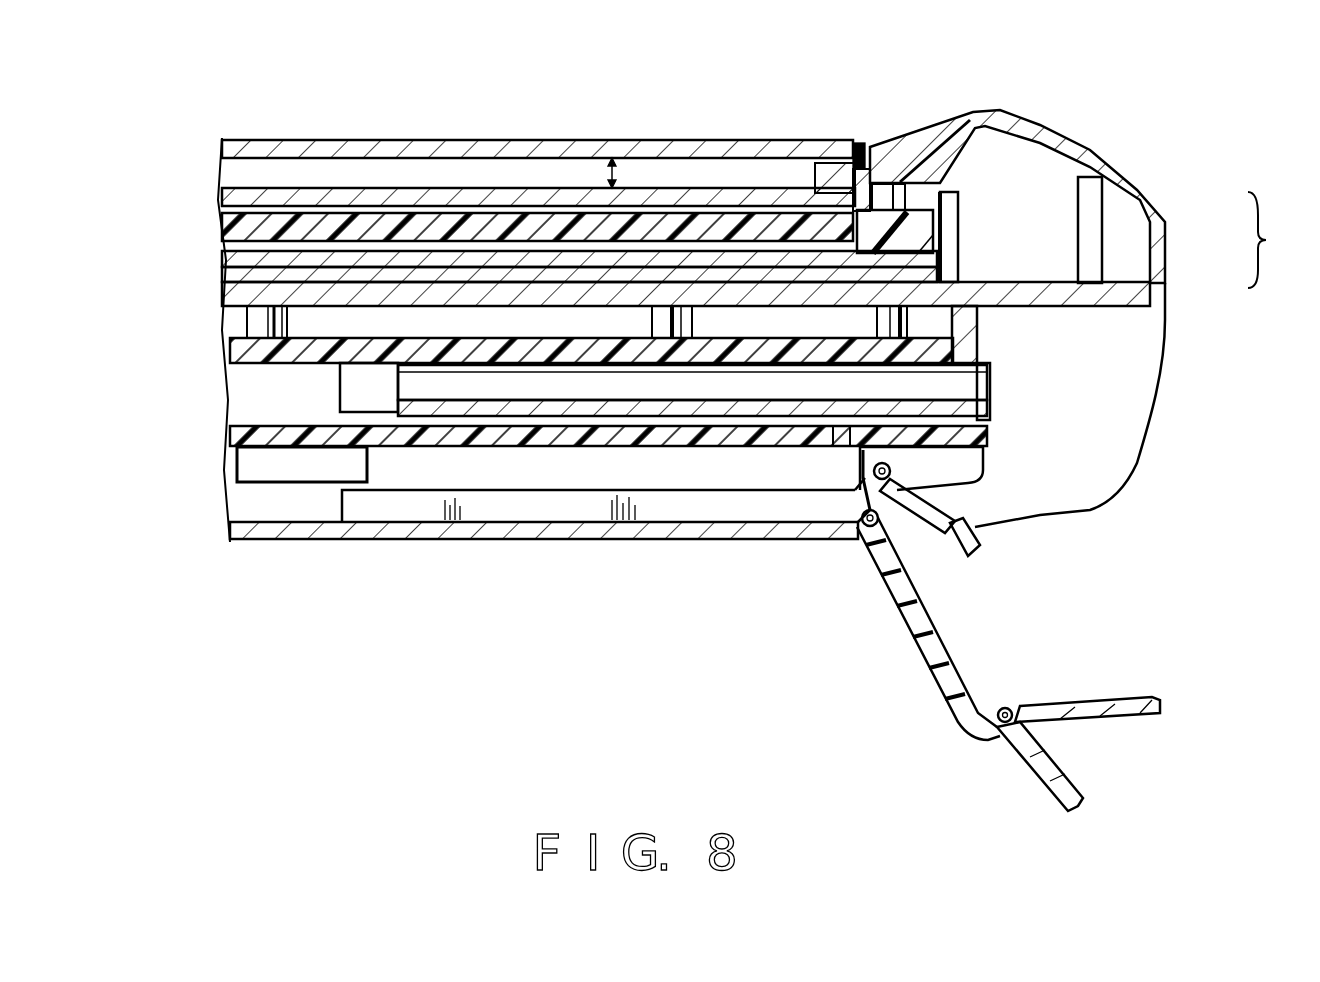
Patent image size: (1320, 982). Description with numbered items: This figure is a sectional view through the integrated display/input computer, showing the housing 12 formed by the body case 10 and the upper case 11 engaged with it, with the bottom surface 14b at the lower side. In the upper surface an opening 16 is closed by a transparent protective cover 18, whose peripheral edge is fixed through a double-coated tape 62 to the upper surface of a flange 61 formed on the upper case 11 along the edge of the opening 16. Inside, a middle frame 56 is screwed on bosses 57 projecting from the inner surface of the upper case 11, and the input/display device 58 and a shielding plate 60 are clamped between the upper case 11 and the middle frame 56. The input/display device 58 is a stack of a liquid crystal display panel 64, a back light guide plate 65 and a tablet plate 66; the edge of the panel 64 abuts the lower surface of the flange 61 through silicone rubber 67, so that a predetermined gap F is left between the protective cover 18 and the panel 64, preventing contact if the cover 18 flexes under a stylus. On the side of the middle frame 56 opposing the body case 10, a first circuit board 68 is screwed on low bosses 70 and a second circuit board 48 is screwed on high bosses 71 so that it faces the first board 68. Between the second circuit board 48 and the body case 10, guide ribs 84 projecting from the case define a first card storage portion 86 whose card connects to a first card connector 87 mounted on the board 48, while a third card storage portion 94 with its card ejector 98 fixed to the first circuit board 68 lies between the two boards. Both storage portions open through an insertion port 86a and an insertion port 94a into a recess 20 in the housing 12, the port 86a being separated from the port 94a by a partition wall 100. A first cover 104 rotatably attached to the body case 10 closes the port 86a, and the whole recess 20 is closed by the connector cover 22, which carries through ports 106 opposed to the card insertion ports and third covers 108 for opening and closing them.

The body case 10 is at (1150, 330).
The upper case 11 is at (1168, 233).
The housing 12 is at (1277, 240).
The bottom surface 14b is at (315, 530).
The opening 16 is at (847, 145).
The protective cover 18 is at (537, 145).
The recess 20 is at (1128, 405).
The connector cover 22 is at (927, 667).
The second circuit board 48 is at (268, 425).
The middle frame 56 is at (1030, 303).
The bosses 57 is at (1078, 195).
The input/display device 58 is at (200, 231).
The shielding plate 60 is at (955, 260).
The flange 61 is at (813, 187).
The double-coated tape 62 is at (833, 163).
The liquid crystal display panel 64 is at (250, 195).
The back light guide plate 65 is at (320, 222).
The tablet plate 66 is at (378, 253).
The silicone rubber 67 is at (813, 183).
The first circuit board 68 is at (235, 345).
The low bosses 70 is at (255, 318).
The high bosses 71 is at (645, 325).
The guide ribs 84 is at (510, 510).
The first card storage portion 86 is at (672, 480).
The insertion port 86a is at (922, 468).
The first card connector 87 is at (270, 470).
The third card storage portion 94 is at (587, 392).
The insertion port 94a is at (977, 388).
The card ejector 98 is at (760, 410).
The partition wall 100 is at (905, 490).
The first cover 104 is at (930, 550).
The through port 106 is at (1083, 720).
The third cover 108 is at (1047, 780).
The gap F is at (643, 147).